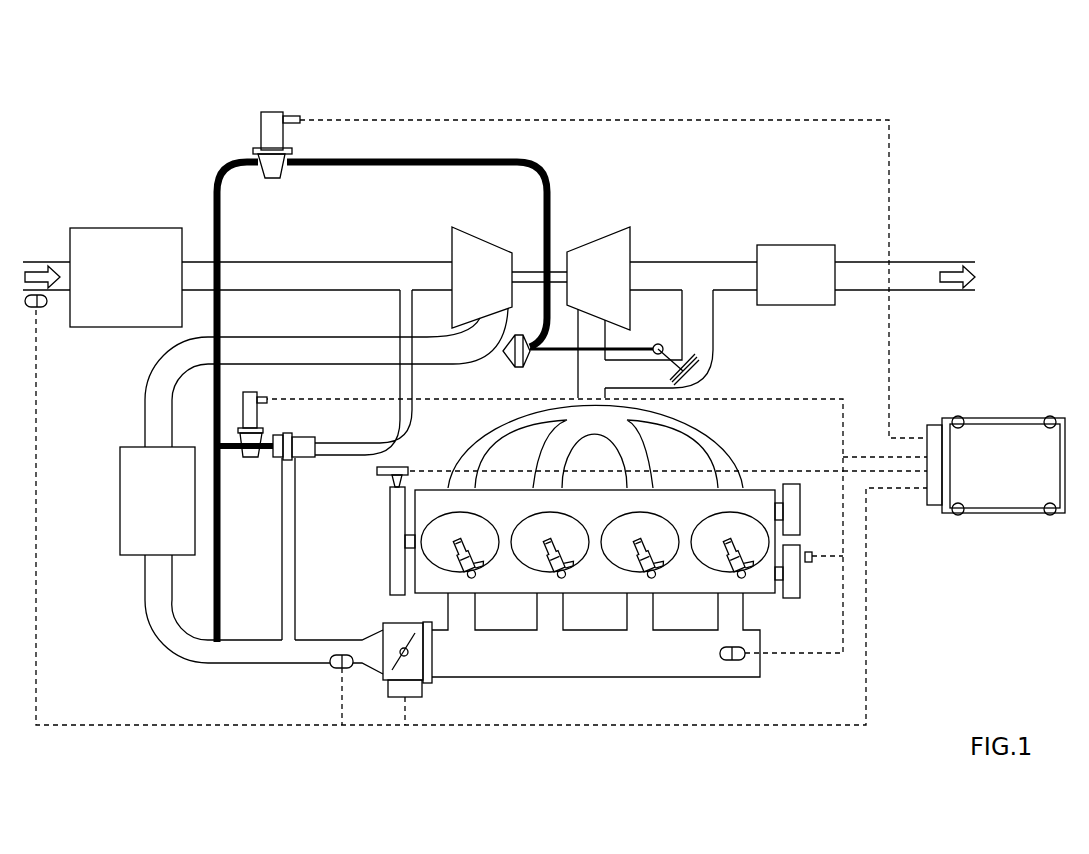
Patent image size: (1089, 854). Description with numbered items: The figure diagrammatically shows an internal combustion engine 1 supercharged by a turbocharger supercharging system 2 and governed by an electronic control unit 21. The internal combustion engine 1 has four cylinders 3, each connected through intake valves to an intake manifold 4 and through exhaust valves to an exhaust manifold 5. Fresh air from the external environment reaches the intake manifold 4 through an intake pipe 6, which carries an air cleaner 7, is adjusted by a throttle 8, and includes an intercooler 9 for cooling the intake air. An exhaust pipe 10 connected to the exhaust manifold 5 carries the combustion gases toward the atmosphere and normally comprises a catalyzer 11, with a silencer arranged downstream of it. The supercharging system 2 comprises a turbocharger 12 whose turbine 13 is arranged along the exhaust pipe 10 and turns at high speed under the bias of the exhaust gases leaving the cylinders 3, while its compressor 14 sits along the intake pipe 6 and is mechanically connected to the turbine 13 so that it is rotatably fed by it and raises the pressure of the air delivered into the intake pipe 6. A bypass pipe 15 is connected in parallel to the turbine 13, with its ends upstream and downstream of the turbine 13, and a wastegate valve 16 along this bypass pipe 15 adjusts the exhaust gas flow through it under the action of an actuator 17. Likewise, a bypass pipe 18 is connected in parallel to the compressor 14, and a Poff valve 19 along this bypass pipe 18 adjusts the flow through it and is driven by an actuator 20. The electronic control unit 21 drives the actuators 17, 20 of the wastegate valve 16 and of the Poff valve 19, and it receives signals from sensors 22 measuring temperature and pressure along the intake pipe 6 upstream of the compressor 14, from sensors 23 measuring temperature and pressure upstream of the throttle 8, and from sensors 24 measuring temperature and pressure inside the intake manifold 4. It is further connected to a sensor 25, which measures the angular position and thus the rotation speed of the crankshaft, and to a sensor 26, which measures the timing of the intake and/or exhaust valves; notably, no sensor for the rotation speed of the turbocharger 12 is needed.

The internal combustion engine 1 is at (148, 141).
The turbocharger supercharging system 2 is at (389, 238).
The cylinders 3 is at (595, 546).
The intake manifold 4 is at (595, 580).
The exhaust manifold 5 is at (595, 446).
The intake pipe 6 is at (155, 413).
The air cleaner 7 is at (126, 277).
The throttle 8 is at (403, 672).
The intercooler 9 is at (157, 501).
The exhaust pipe 10 is at (737, 272).
The catalyzer 11 is at (796, 275).
The turbocharger 12 is at (537, 234).
The turbine 13 is at (578, 264).
The compressor 14 is at (464, 247).
The bypass pipe 15 is at (710, 334).
The wastegate valve 16 is at (690, 369).
The actuator 17 is at (283, 133).
The bypass pipe 18 is at (292, 538).
The Poff valve 19 is at (294, 462).
The actuator 20 is at (253, 412).
The electronic control unit 21 is at (996, 465).
The sensors 22 is at (38, 308).
The sensors 23 is at (337, 669).
The sensors 24 is at (731, 661).
The sensor 25 is at (408, 467).
The sensor 26 is at (810, 564).